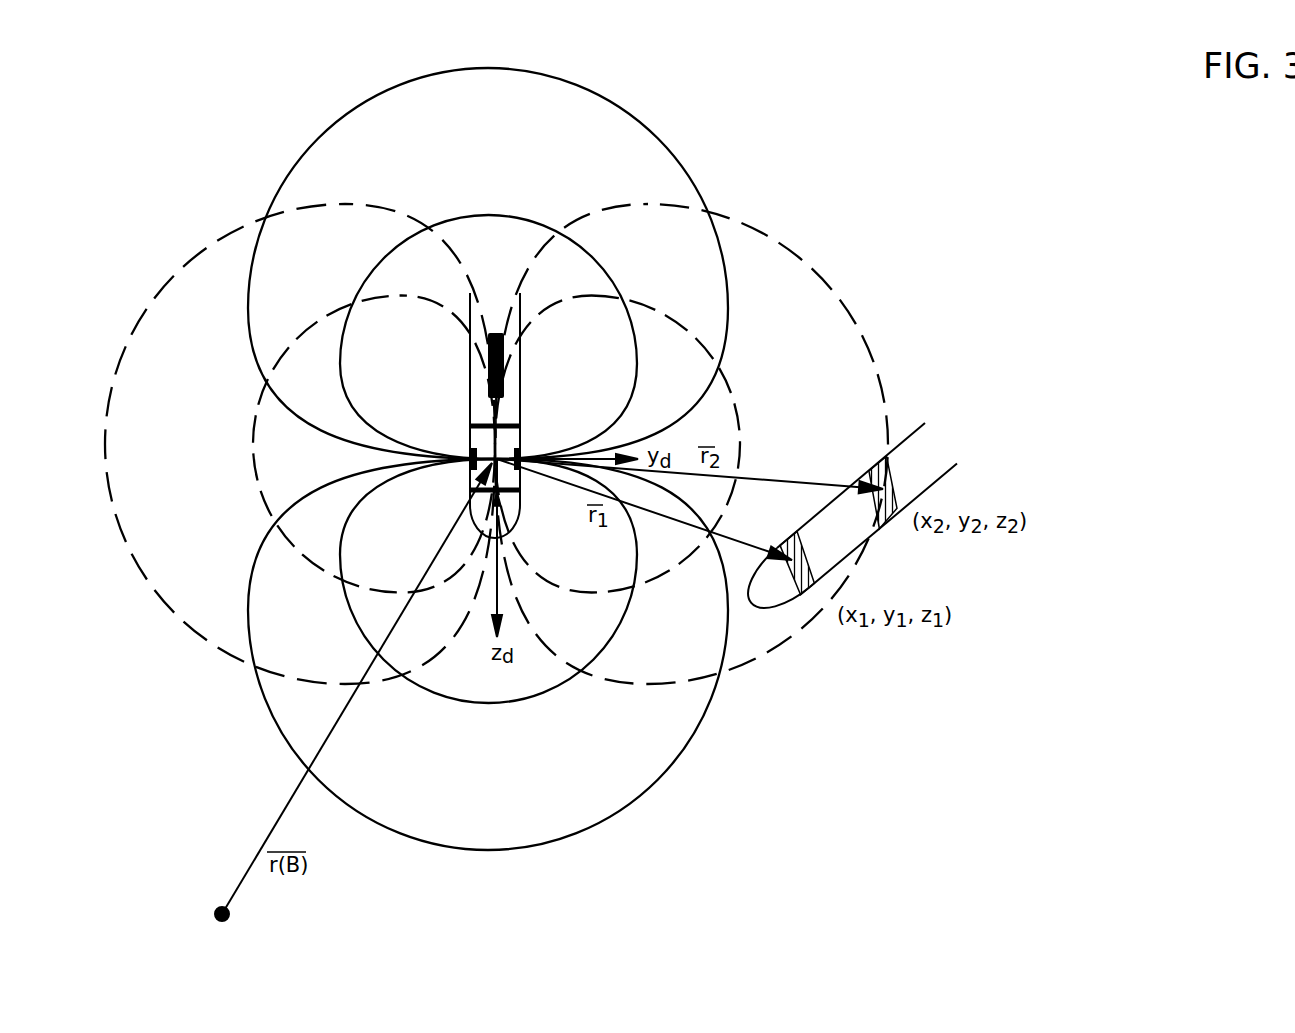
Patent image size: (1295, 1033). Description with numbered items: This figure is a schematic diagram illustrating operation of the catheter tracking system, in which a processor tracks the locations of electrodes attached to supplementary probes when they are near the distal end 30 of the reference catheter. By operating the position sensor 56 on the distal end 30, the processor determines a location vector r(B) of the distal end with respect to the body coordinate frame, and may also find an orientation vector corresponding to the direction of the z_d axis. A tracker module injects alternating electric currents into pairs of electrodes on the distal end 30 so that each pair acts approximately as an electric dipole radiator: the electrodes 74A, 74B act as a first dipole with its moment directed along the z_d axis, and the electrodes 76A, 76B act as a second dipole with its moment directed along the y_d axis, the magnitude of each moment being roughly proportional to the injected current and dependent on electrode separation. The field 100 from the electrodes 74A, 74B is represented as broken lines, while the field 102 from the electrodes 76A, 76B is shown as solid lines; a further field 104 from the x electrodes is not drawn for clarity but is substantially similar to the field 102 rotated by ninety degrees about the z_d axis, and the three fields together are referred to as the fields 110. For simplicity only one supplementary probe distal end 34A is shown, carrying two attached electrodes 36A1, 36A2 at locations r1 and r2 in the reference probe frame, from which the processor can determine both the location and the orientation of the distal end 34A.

The distal end of the reference catheter 30 is at (470, 398).
The position sensor 56 is at (488, 366).
The electrode 74A is at (520, 491).
The electrode 74B is at (520, 424).
The electrode 76A is at (521, 457).
The electrode 76B is at (470, 467).
The field 100 is at (836, 291).
The field 102 is at (674, 150).
The field 104 is at (935, 191).
The fields 110 is at (1072, 297).
The supplementary probe distal end 34A is at (945, 472).
The electrode 36A1 is at (812, 583).
The electrode 36A2 is at (897, 510).